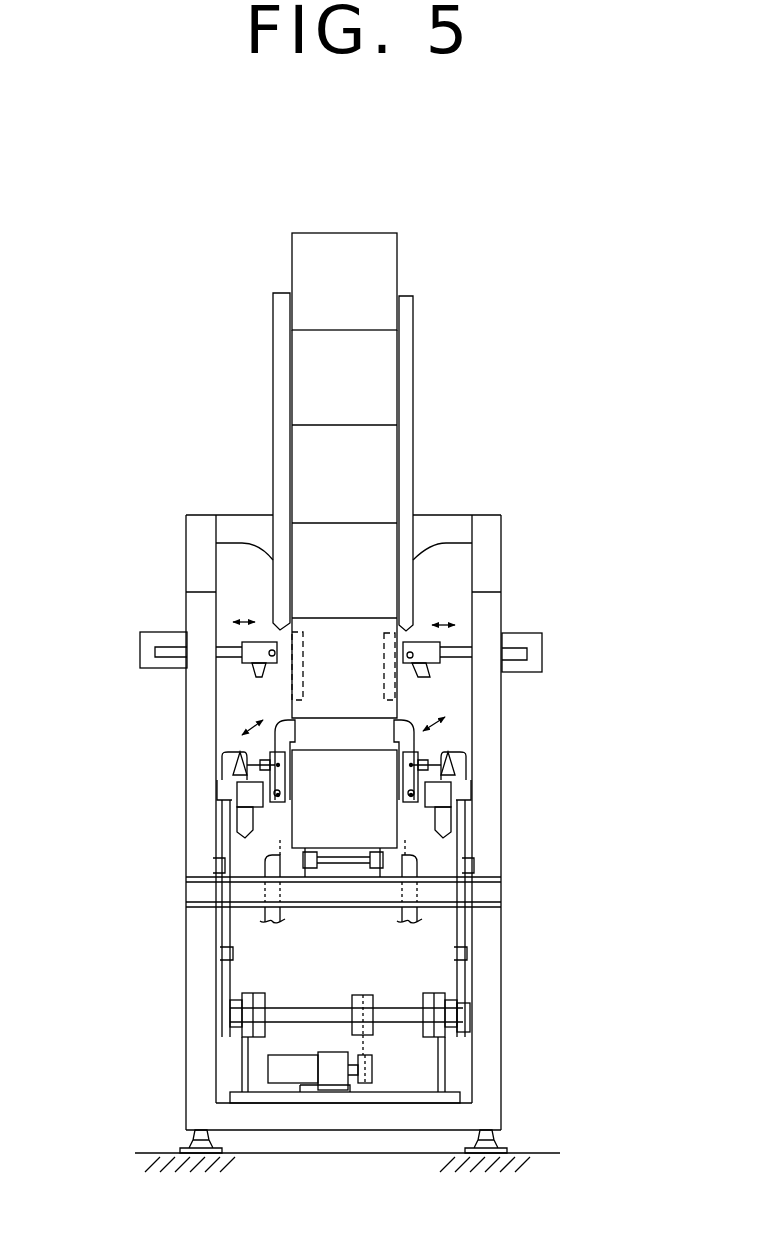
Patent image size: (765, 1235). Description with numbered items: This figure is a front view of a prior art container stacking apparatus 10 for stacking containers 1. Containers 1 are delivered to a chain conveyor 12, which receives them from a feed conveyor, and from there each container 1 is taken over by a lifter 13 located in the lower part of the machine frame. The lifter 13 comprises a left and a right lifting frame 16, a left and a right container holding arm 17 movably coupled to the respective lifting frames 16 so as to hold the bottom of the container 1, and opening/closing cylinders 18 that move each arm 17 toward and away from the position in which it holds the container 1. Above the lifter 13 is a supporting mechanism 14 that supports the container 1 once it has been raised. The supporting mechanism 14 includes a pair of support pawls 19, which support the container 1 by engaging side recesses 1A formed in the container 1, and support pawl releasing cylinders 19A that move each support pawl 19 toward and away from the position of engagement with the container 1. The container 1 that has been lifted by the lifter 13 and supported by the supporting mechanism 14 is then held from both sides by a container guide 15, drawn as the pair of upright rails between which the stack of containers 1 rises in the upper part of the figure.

The container 1 is at (387, 258).
The side recess 1A is at (377, 680).
The container stacking apparatus 10 is at (245, 392).
The chain conveyor 12 is at (397, 823).
The lifter 13 is at (222, 1057).
The supporting mechanism 14 is at (535, 626).
The container guide 15 is at (408, 343).
The lifting frame 16 is at (240, 838).
The container holding arm 17 is at (407, 713).
The opening/closing cylinder 18 is at (456, 758).
The support pawl 19 is at (403, 645).
The support pawl releasing cylinder 19A is at (532, 662).